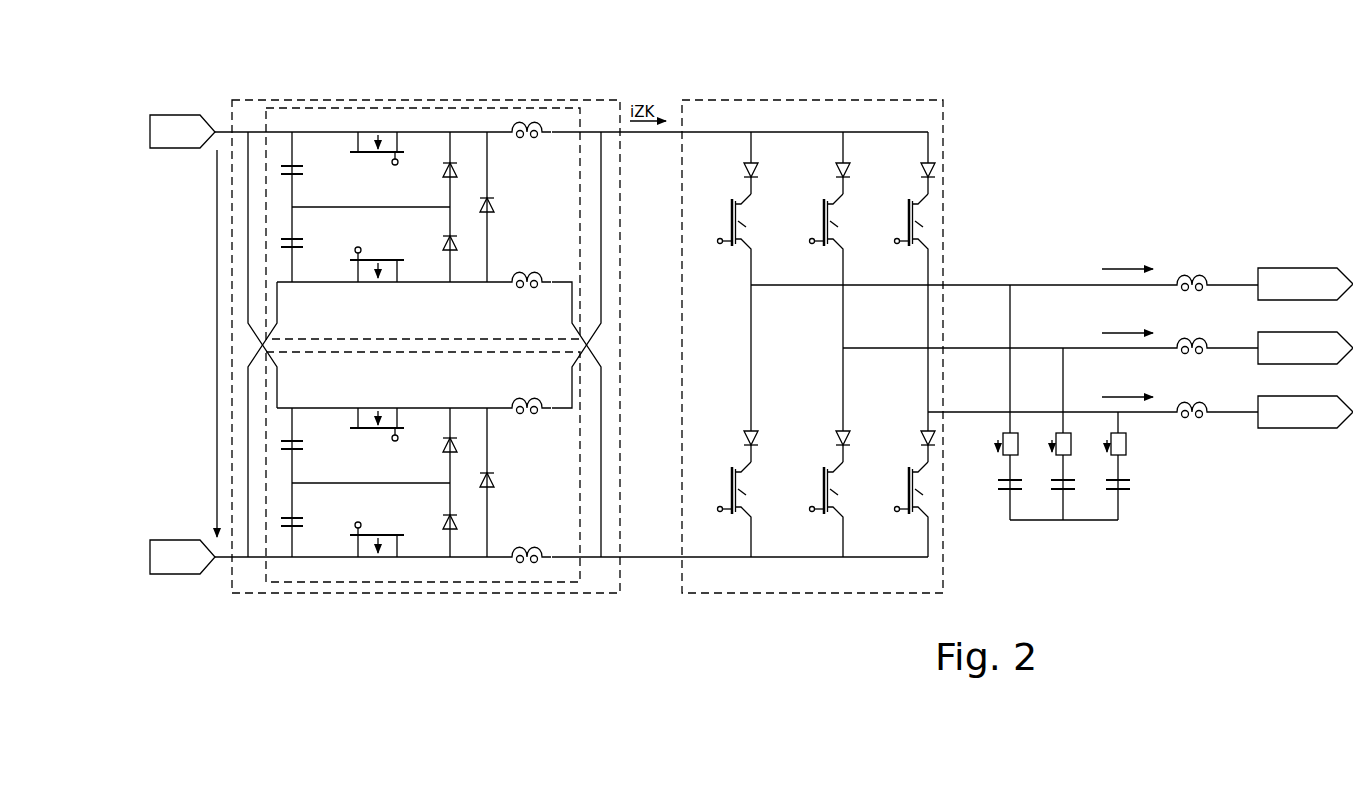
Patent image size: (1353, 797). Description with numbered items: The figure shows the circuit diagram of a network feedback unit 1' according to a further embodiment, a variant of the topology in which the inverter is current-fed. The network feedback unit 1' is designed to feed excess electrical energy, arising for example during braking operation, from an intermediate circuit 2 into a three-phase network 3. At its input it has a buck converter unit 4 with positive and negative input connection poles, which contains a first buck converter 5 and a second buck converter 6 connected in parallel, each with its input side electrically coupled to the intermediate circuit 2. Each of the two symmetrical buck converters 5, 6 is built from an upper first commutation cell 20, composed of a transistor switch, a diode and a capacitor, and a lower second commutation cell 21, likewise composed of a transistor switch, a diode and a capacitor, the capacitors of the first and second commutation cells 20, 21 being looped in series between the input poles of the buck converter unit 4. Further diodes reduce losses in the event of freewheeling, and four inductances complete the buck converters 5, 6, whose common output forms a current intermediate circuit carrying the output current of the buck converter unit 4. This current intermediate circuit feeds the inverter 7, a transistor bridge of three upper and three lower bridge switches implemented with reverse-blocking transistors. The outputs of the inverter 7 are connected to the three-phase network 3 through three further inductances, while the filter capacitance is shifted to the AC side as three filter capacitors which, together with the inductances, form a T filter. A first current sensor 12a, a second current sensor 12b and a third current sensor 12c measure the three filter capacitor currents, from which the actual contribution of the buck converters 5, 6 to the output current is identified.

The network feedback unit 1' is at (571, 280).
The intermediate circuit 2 is at (178, 286).
The three-phase network 3 is at (1304, 248).
The buck converter unit 4 is at (476, 100).
The first buck converter 5 is at (455, 339).
The second buck converter 6 is at (463, 353).
The inverter 7 is at (905, 100).
The first commutation cell 20 is at (390, 188).
The second commutation cell 21 is at (390, 253).
The first current sensor 12a is at (1004, 456).
The second current sensor 12b is at (1059, 456).
The third current sensor 12c is at (1150, 436).